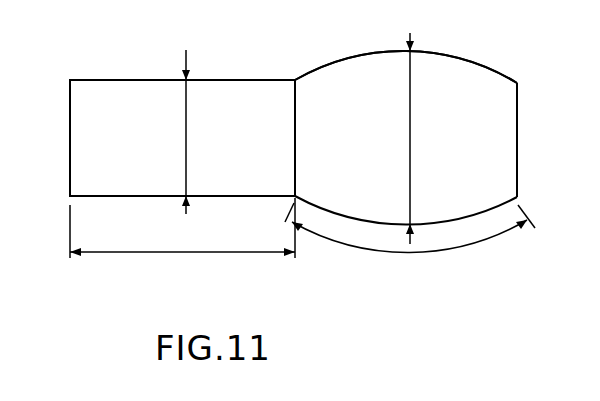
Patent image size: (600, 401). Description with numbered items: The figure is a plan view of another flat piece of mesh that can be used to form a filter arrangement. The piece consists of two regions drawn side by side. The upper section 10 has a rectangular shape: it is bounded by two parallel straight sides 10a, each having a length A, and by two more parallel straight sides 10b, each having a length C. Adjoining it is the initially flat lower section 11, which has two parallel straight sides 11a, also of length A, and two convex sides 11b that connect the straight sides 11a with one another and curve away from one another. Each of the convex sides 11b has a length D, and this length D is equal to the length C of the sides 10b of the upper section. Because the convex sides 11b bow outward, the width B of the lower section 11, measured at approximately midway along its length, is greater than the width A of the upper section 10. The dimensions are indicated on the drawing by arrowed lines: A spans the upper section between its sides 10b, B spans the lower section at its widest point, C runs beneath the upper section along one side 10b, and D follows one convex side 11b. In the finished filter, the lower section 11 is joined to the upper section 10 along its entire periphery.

The upper section 10 is at (86, 146).
The parallel straight sides of upper section 10a is at (70, 106).
The parallel straight sides of upper section 10b is at (146, 80).
The lower section 11 is at (499, 84).
The parallel straight sides of lower section 11a is at (517, 147).
The convex sides 11b is at (458, 58).
The length of straight sides A is at (194, 126).
The width of lower section B is at (416, 132).
The length of sides 10b C is at (182, 242).
The length of convex sides D is at (410, 149).